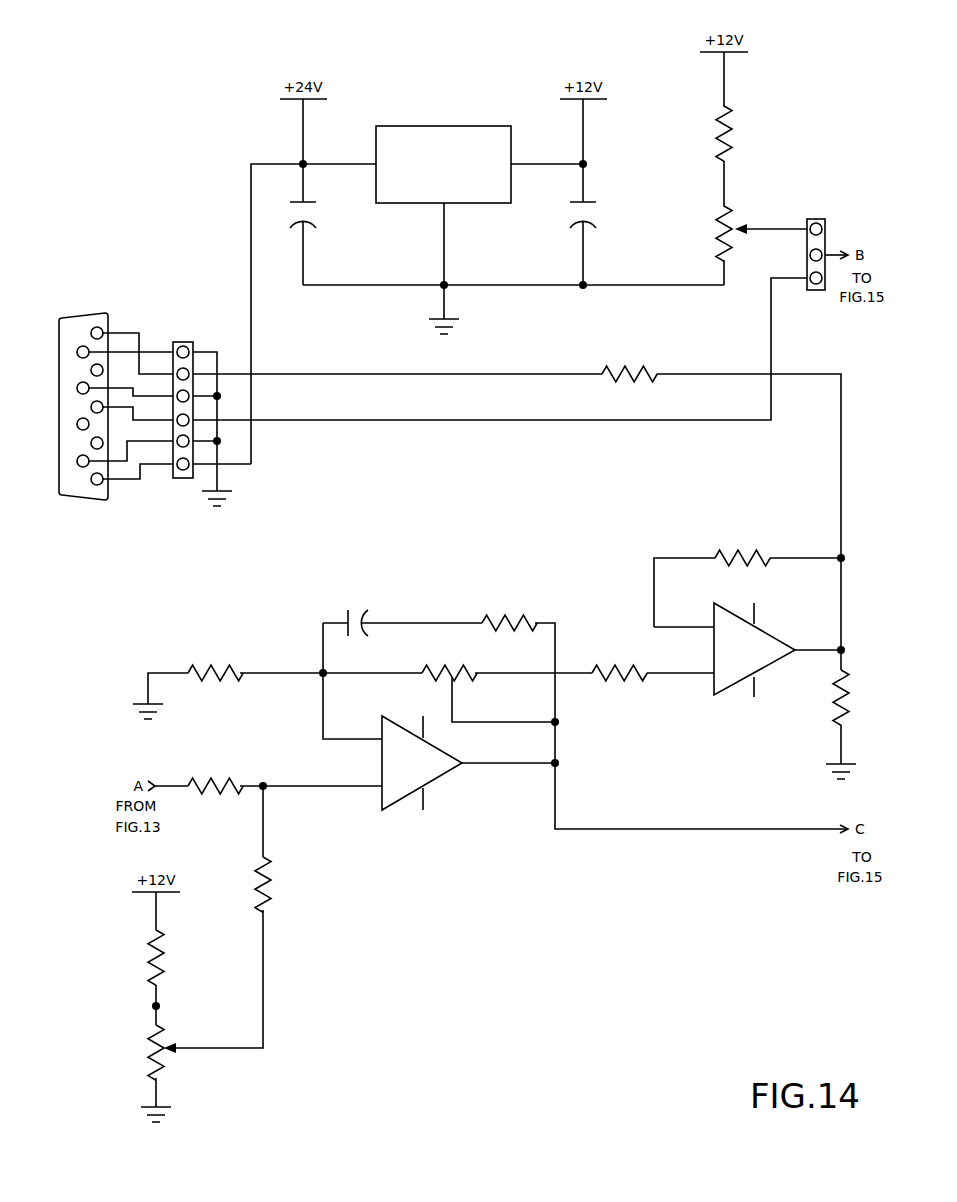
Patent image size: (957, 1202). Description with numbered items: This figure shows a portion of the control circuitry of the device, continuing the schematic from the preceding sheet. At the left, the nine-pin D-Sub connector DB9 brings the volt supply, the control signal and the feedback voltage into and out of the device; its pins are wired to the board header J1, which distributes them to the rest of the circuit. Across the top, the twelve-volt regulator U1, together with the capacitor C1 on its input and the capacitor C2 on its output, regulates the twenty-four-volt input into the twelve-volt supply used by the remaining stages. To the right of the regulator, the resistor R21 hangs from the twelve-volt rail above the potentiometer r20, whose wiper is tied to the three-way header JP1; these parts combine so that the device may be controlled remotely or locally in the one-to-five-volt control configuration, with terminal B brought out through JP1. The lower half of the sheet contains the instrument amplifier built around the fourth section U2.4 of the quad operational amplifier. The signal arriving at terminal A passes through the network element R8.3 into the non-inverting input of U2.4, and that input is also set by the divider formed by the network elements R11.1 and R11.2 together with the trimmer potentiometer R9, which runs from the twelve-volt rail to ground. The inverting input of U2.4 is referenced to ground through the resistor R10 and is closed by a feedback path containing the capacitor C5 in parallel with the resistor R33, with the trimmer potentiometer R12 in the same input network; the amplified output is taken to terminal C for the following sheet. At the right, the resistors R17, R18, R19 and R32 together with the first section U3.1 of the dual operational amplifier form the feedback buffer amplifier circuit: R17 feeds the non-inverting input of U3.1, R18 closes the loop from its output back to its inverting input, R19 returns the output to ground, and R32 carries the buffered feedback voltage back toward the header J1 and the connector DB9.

The 12 volt regulator U1 is at (443, 151).
The capacitor C1 is at (290, 215).
The capacitor C2 is at (570, 215).
The resistor R21 is at (707, 133).
The potentiometer r20 is at (745, 233).
The 3-way header JP1 is at (825, 244).
The 9-pin D-Sub connector DB9 is at (83, 394).
The connector J1 is at (190, 398).
The resistor R32 is at (629, 363).
The resistor R18 is at (742, 547).
The dual operational amplifier section U3.1 is at (754, 639).
The resistor R19 is at (824, 697).
The resistor R17 is at (619, 662).
The resistor R10 is at (215, 662).
The capacitor C5 is at (357, 613).
The resistor R33 is at (509, 612).
The trimmer potentiometer R12 is at (449, 662).
The quad operational amplifier section U2.4 is at (422, 751).
The resistor network element R8.3 is at (215, 775).
The resistor network element R11.2 is at (241, 884).
The resistor network element R11.1 is at (133, 957).
The trimmer potentiometer R9 is at (147, 1052).